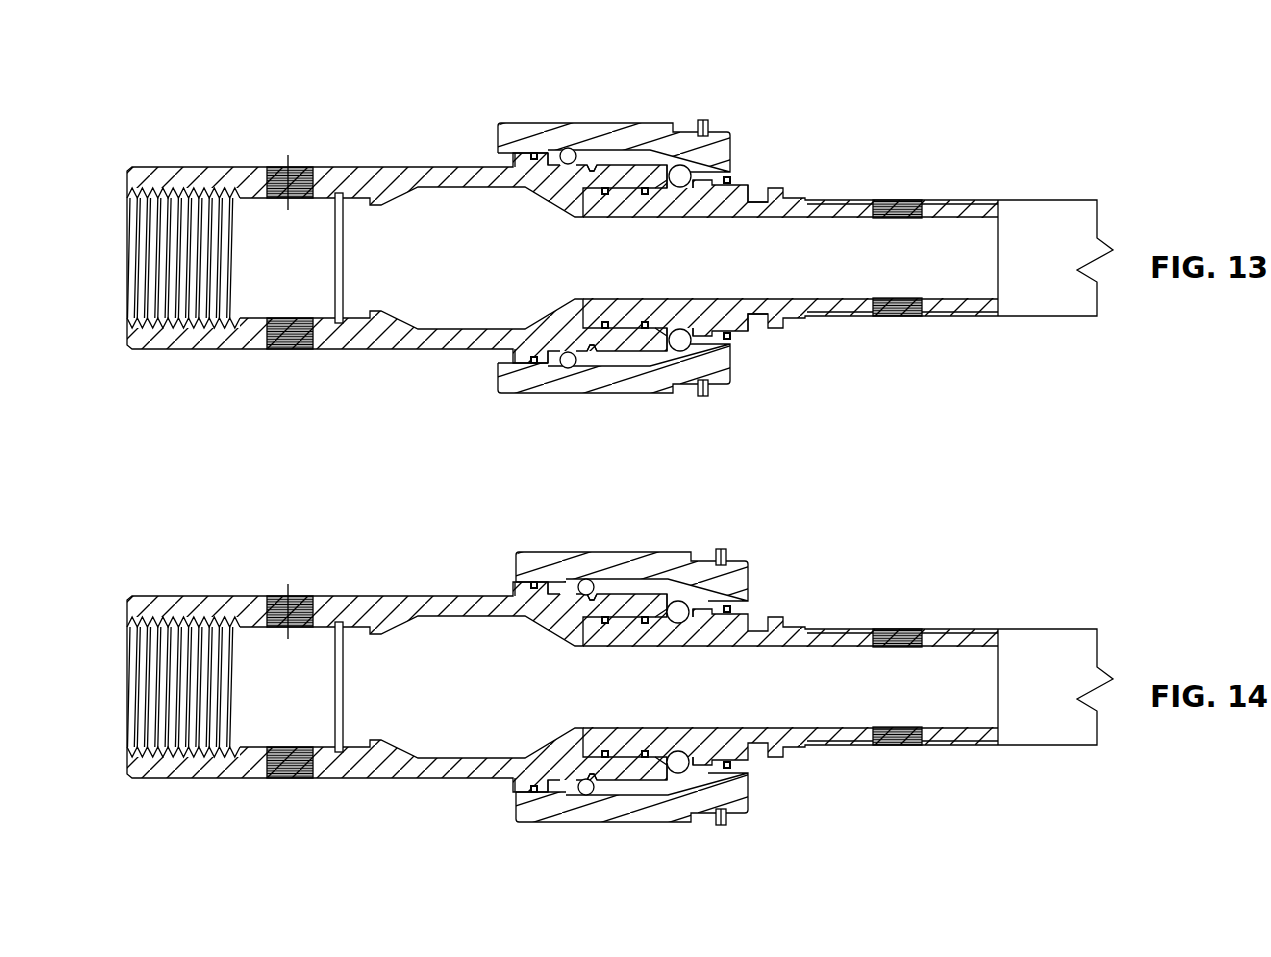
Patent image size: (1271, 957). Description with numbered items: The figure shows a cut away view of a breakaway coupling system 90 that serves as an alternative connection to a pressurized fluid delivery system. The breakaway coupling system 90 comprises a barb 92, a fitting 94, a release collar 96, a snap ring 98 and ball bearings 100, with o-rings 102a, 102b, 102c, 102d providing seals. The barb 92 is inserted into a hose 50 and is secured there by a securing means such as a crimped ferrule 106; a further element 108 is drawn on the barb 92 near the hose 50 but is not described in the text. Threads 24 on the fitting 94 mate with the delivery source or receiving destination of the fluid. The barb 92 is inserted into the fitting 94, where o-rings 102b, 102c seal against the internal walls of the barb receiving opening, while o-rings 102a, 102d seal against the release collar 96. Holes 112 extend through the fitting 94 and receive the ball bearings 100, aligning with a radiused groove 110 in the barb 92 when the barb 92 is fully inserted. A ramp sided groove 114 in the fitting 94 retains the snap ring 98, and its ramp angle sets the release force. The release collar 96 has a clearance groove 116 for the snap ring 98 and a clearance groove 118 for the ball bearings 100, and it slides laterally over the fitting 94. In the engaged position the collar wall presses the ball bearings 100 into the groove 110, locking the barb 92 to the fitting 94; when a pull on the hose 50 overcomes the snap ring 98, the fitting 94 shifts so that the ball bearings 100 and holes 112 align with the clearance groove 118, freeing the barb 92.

In FIG. 13, the threads 24 is at (130, 258).
In FIG. 14, the threads 24 is at (149, 687).
In FIG. 13, the hose 50 is at (1048, 317).
In FIG. 14, the hose 50 is at (1055, 724).
In FIG. 13, the breakaway coupling system 90 is at (121, 155).
In FIG. 14, the breakaway coupling system 90 is at (582, 673).
In FIG. 13, the barb 92 is at (978, 200).
In FIG. 14, the barb 92 is at (790, 667).
In FIG. 13, the fitting 94 is at (405, 167).
In FIG. 14, the fitting 94 is at (470, 670).
In FIG. 13, the release collar 96 is at (630, 123).
In FIG. 14, the release collar 96 is at (633, 650).
In FIG. 13, the snap ring 98 is at (568, 148).
In FIG. 14, the snap ring 98 is at (588, 633).
In FIG. 13, the ball bearings 100 is at (690, 170).
In FIG. 14, the ball bearings 100 is at (747, 653).
In FIG. 13, the o-ring 102a is at (500, 130).
In FIG. 14, the o-ring 102a is at (495, 651).
In FIG. 13, the o-ring 102b is at (644, 167).
In FIG. 14, the o-ring 102b is at (657, 619).
In FIG. 13, the o-ring 102c is at (665, 175).
In FIG. 14, the o-ring 102c is at (679, 639).
In FIG. 13, the o-ring 102d is at (733, 178).
In FIG. 14, the o-ring 102d is at (791, 668).
In FIG. 13, the crimped ferrule 106 is at (848, 318).
In FIG. 14, the crimped ferrule 106 is at (902, 721).
In FIG. 13, the knurled grip 108 is at (900, 200).
In FIG. 14, the knurled grip 108 is at (900, 647).
In FIG. 13, the groove 110 is at (752, 186).
In FIG. 13, the holes 112 is at (692, 165).
In FIG. 14, the holes 112 is at (638, 735).
In FIG. 13, the ramp sided groove 114 is at (593, 165).
In FIG. 14, the ramp sided groove 114 is at (592, 687).
In FIG. 13, the clearance groove 116 is at (560, 148).
In FIG. 14, the clearance groove 116 is at (552, 636).
In FIG. 13, the clearance groove 118 is at (723, 150).
In FIG. 14, the clearance groove 118 is at (747, 661).